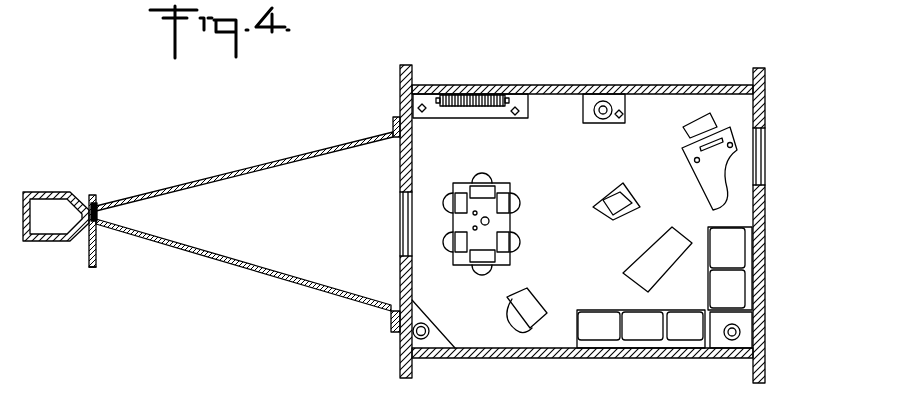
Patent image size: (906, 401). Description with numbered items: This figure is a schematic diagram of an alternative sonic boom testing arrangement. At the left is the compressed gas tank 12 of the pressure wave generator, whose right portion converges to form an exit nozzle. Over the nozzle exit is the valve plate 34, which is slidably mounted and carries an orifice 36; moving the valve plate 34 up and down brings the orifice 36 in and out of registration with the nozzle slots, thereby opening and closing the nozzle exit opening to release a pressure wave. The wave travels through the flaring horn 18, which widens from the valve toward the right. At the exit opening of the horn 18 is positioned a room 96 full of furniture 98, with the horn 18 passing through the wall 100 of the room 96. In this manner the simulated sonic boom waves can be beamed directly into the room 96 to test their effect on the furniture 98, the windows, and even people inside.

The compressed gas tank 12 is at (55, 191).
The orifice 36 is at (97, 207).
The valve plate 34 is at (96, 252).
The horn 18 is at (333, 147).
The room wall 100 is at (400, 176).
The room 96 is at (623, 358).
The furniture 98 is at (580, 113).